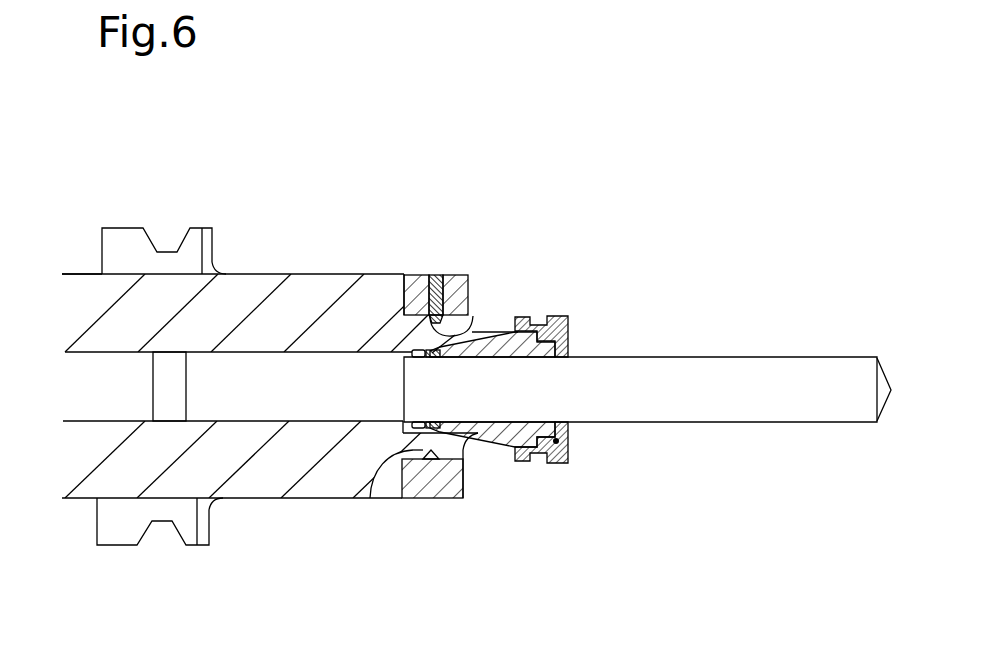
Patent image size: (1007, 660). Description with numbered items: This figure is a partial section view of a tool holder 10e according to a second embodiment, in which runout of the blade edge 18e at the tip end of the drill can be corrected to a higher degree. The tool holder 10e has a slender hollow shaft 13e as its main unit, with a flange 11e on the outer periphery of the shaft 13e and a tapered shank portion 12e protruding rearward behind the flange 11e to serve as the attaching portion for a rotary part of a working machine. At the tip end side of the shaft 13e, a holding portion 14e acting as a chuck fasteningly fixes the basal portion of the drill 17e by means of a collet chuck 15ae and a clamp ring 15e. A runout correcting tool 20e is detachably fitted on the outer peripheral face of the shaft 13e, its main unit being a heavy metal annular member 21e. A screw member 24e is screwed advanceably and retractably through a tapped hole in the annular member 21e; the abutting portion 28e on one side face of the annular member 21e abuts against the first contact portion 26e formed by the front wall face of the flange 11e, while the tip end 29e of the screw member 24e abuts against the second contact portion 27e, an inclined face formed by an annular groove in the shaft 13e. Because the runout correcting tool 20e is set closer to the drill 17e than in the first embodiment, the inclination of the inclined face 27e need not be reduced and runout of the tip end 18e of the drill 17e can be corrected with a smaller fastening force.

The tool holder 10e is at (88, 266).
The flange 11e is at (133, 245).
The tapered shank portion 12e is at (88, 302).
The shaft 13e is at (370, 474).
The holding portion 14e is at (570, 318).
The clamp ring 15e is at (560, 460).
The collet chuck 15ae is at (565, 433).
The drill 17e is at (727, 407).
The tip end of the tool 18e is at (877, 390).
The runout correcting tool 20e is at (478, 268).
The annular member 21e is at (457, 275).
The screw member 24e is at (433, 275).
The first contact portion 26e is at (397, 305).
The second contact portion 27e is at (480, 326).
The abutting portion 28e is at (430, 310).
The tip end of the screw member 29e is at (490, 320).